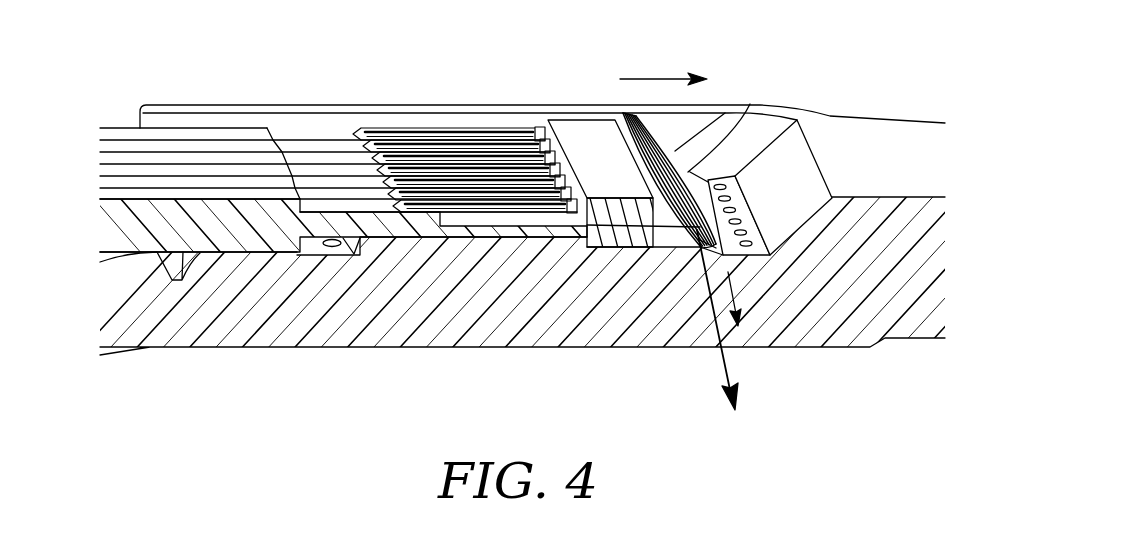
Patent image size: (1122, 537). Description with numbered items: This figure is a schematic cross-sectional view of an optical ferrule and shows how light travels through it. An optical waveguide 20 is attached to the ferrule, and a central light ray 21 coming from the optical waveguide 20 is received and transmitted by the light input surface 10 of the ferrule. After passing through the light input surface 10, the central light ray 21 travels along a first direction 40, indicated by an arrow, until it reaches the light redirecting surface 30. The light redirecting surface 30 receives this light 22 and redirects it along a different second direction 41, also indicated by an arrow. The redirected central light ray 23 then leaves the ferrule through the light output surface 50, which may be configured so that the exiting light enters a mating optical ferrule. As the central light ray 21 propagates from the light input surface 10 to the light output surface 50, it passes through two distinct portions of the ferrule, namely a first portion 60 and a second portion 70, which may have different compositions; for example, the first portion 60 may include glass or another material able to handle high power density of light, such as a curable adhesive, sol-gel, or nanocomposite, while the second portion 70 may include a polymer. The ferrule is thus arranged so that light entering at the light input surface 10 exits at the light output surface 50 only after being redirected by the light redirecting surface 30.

The light input surface 10 is at (578, 230).
The optical waveguide 20 is at (232, 220).
The central light ray 21 is at (479, 225).
The received light 22 is at (700, 167).
The redirected central light ray 23 is at (700, 267).
The light redirecting surface 30 is at (727, 176).
The first direction 40 is at (667, 78).
The second direction 41 is at (740, 290).
The light output surface 50 is at (703, 347).
The first portion 60 is at (591, 128).
The second portion 70 is at (853, 325).